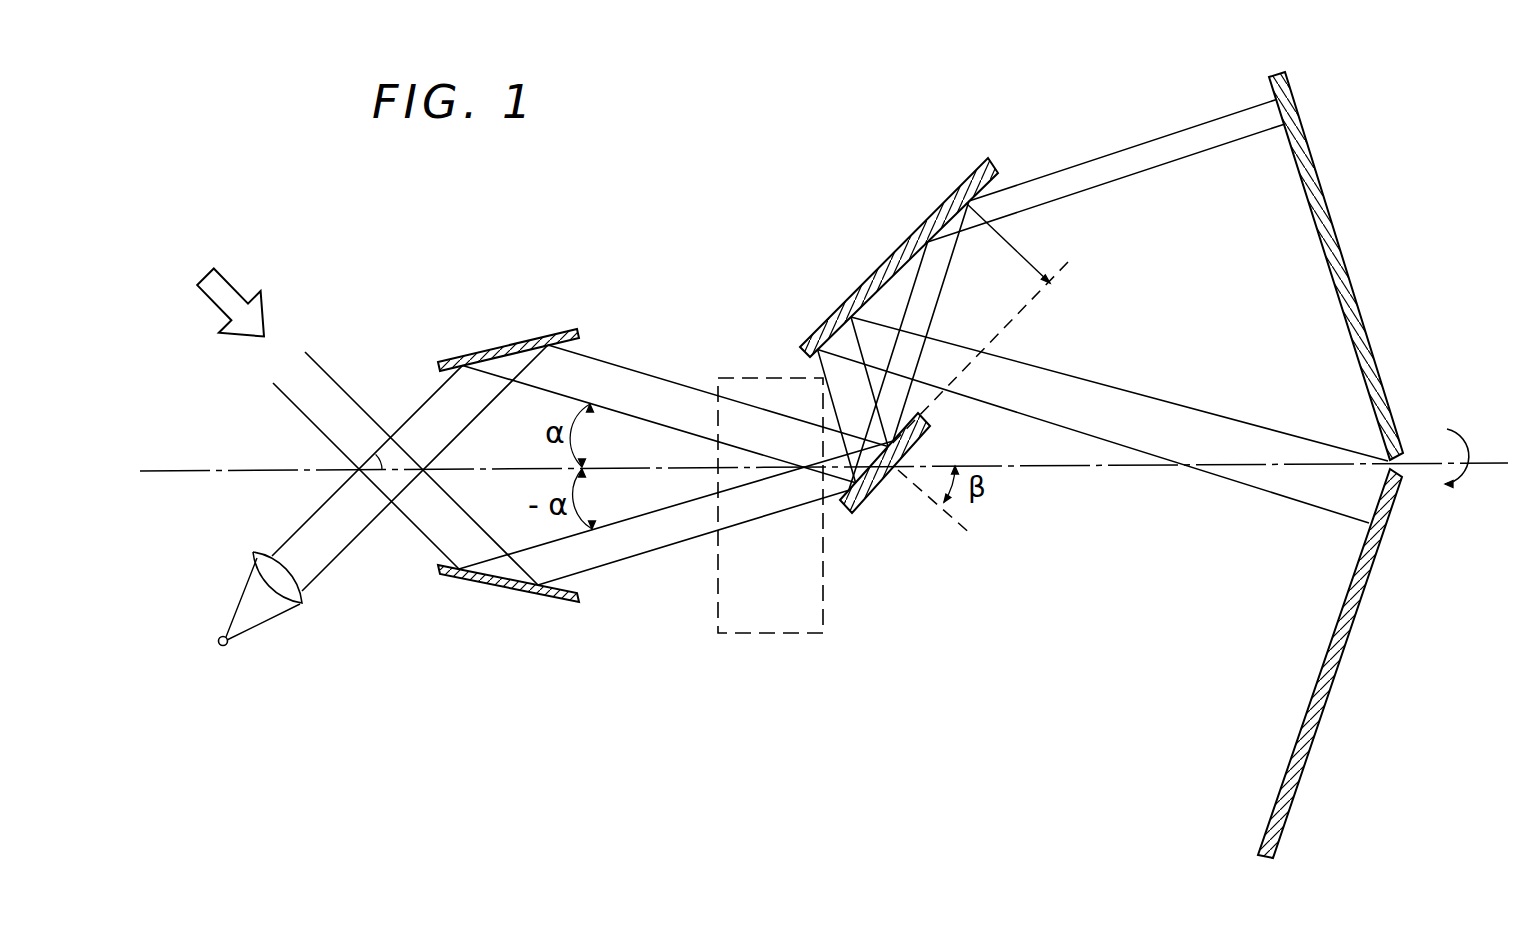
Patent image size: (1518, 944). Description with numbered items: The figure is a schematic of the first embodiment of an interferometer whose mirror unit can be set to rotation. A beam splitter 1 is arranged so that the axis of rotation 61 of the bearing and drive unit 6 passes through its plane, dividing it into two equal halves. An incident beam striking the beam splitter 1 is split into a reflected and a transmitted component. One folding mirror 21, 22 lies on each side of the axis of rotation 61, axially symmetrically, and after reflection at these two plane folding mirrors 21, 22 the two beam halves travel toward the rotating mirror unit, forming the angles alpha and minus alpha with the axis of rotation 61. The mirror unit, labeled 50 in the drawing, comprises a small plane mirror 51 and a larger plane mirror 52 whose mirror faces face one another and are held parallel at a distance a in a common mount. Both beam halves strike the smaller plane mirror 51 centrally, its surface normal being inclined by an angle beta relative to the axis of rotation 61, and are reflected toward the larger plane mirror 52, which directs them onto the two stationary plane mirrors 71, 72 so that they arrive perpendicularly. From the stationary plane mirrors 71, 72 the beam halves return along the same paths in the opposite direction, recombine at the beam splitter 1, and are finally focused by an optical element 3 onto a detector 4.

The beam splitter 1 is at (368, 446).
The optical element 3 is at (301, 605).
The detector 4 is at (222, 648).
The bearing and drive unit 6 is at (808, 612).
The folding mirror 21 is at (500, 347).
The folding mirror 22 is at (566, 600).
The mirror assembly 50 is at (929, 366).
The small plane mirror 51 is at (877, 508).
The larger plane mirror 52 is at (843, 306).
The axis of rotation 61 is at (250, 468).
The stationary plane mirror 71 is at (1333, 228).
The stationary plane mirror 72 is at (1320, 723).